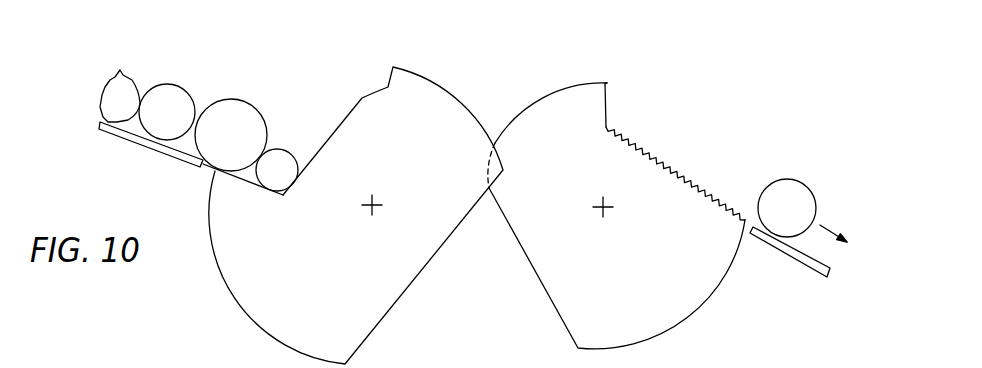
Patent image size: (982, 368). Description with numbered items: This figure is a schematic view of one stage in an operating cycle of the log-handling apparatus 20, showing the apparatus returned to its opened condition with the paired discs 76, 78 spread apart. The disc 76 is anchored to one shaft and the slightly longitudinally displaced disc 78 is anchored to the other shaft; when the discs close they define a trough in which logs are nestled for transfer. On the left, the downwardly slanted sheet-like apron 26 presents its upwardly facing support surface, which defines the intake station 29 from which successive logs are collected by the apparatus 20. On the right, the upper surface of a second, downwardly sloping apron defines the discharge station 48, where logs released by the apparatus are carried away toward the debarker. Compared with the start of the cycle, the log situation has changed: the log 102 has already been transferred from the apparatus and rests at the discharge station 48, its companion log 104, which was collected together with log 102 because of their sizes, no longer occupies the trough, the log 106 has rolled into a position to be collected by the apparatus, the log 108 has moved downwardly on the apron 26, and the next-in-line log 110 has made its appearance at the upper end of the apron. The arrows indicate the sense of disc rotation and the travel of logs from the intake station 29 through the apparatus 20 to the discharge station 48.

The apparatus 20 is at (687, 117).
The apron 26 is at (128, 142).
The intake station 29 is at (207, 83).
The discharge station 48 is at (837, 157).
The disc 76 is at (570, 128).
The disc 78 is at (408, 112).
The log 102 is at (788, 190).
The log 104 is at (285, 163).
The log 106 is at (253, 123).
The log 108 is at (168, 90).
The next-in-line log 110 is at (125, 80).